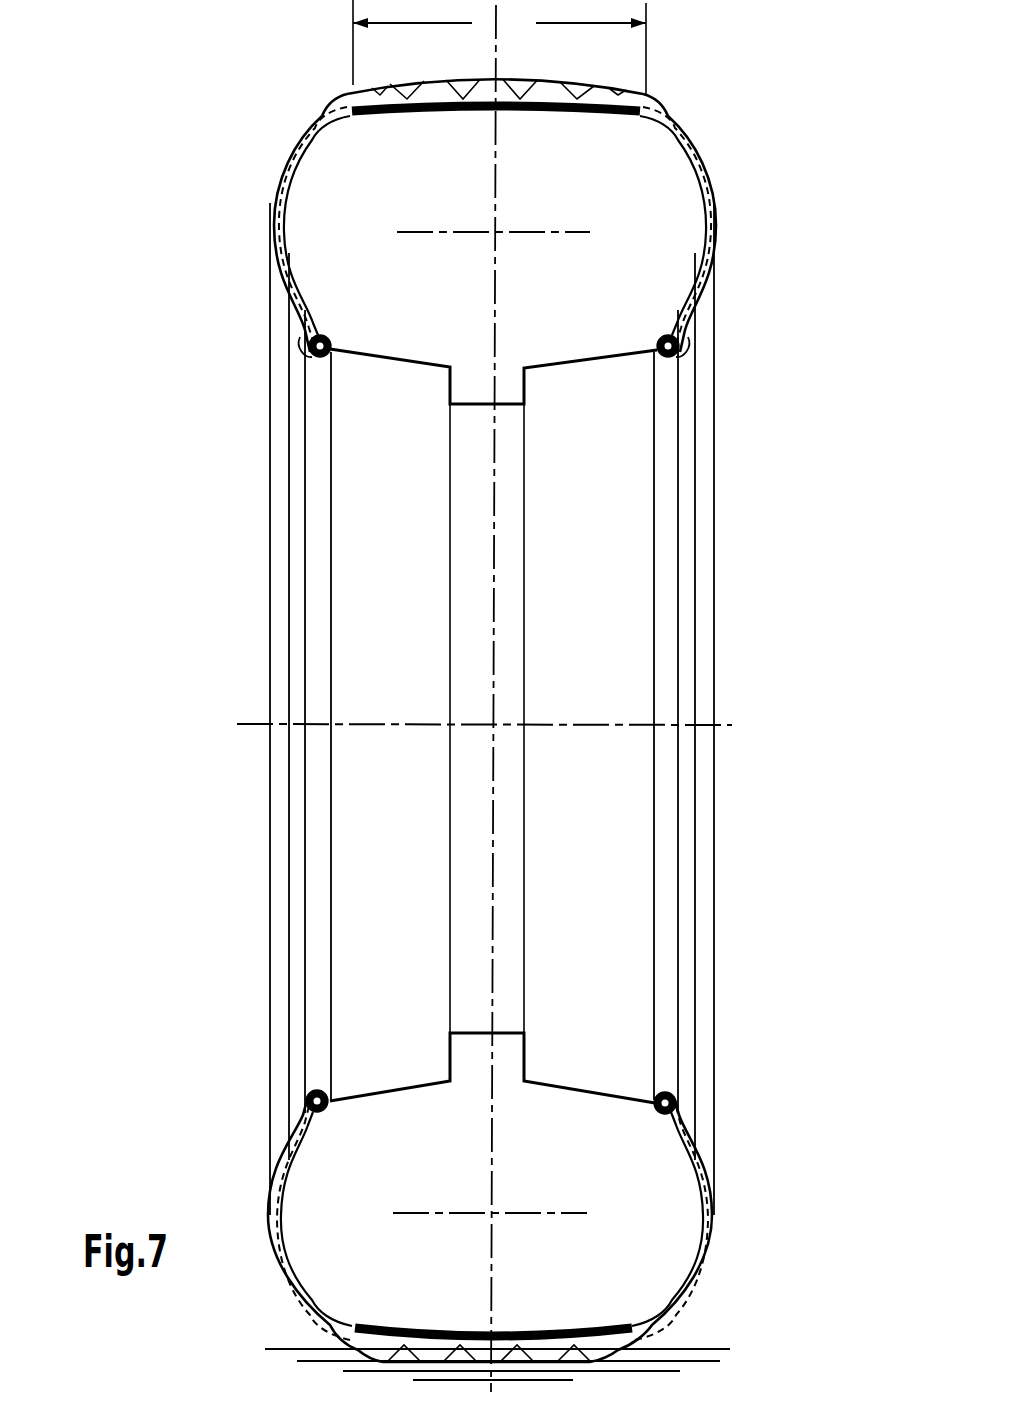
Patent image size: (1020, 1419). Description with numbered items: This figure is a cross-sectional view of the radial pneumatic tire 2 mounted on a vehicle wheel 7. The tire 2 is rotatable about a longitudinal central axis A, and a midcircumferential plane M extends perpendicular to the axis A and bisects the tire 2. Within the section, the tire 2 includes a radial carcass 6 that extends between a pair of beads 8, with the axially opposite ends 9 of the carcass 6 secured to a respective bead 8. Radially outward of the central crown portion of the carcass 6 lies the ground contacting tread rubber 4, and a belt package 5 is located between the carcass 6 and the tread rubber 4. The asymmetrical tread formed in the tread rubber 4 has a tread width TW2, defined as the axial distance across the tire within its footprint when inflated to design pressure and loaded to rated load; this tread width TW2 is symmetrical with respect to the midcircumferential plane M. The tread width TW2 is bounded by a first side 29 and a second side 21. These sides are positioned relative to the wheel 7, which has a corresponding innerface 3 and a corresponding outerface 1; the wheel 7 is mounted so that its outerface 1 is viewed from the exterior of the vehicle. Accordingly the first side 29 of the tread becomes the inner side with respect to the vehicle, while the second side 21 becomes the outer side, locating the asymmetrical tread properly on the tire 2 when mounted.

The outerface 1 is at (305, 465).
The radial pneumatic tire 2 is at (720, 1235).
The innerface 3 is at (678, 922).
The tread rubber 4 is at (500, 80).
The belt package 5 is at (393, 100).
The radial carcass 6 is at (712, 197).
The vehicle wheel 7 is at (285, 588).
The bead 8 is at (330, 346).
The axially opposite end of the carcass 9 is at (300, 337).
The second side 21 is at (350, 68).
The first side 29 is at (646, 67).
The midcircumferential plane M is at (493, 690).
The longitudinal central axis A is at (733, 725).
The tread width TW2 is at (499, 47).